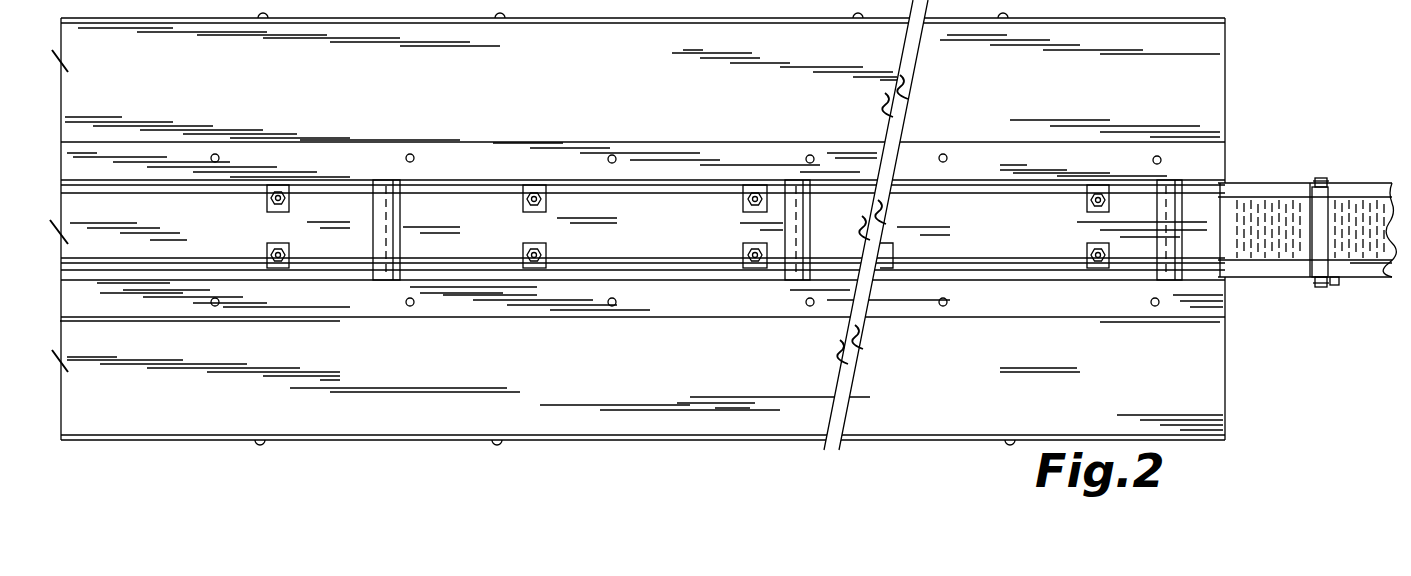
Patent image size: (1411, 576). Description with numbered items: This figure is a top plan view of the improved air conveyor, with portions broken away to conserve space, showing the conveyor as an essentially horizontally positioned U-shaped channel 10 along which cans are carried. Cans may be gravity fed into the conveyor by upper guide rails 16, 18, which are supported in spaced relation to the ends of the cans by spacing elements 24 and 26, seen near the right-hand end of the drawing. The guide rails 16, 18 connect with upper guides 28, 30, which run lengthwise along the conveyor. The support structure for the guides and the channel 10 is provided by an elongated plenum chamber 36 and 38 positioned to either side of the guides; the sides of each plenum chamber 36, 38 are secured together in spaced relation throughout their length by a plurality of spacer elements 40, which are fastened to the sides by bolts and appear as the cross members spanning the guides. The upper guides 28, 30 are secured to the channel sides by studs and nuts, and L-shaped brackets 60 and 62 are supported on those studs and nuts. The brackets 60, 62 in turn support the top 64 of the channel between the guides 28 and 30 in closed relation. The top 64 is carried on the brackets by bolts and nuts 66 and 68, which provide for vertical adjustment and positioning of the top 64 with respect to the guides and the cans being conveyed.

The U-shaped channel 10 is at (593, 442).
The upper guide rail 16 is at (1373, 275).
The upper guide rail 18 is at (1365, 190).
The spacing element 24 is at (1333, 288).
The spacing element 26 is at (1322, 183).
The upper guide 28 is at (672, 265).
The upper guide 30 is at (617, 195).
The plenum chamber 36 is at (718, 385).
The plenum chamber 38 is at (626, 96).
The spacer element 40 is at (392, 198).
The L-shaped bracket 60 is at (267, 250).
The L-shaped bracket 62 is at (267, 201).
The top of the channel 64 is at (501, 240).
The bolt and nut 66 is at (282, 262).
The bolt and nut 68 is at (283, 192).